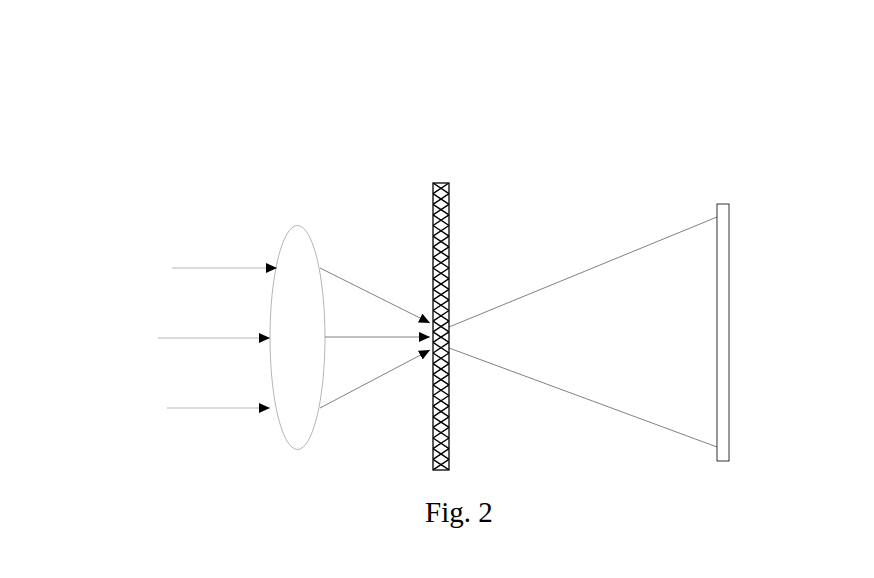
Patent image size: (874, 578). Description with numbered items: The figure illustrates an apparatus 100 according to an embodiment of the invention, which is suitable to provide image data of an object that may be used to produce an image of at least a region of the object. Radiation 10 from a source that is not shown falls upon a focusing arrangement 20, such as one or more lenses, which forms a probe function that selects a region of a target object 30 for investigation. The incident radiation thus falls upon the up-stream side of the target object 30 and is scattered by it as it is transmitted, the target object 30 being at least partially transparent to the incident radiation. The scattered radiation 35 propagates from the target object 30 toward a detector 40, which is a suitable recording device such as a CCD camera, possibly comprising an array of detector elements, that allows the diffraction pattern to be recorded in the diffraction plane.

The apparatus 100 is at (457, 255).
The radiation 10 is at (145, 337).
The focusing arrangement 20 is at (297, 225).
The target object 30 is at (439, 183).
The diverging light rays 35 is at (599, 264).
The detector 40 is at (733, 269).